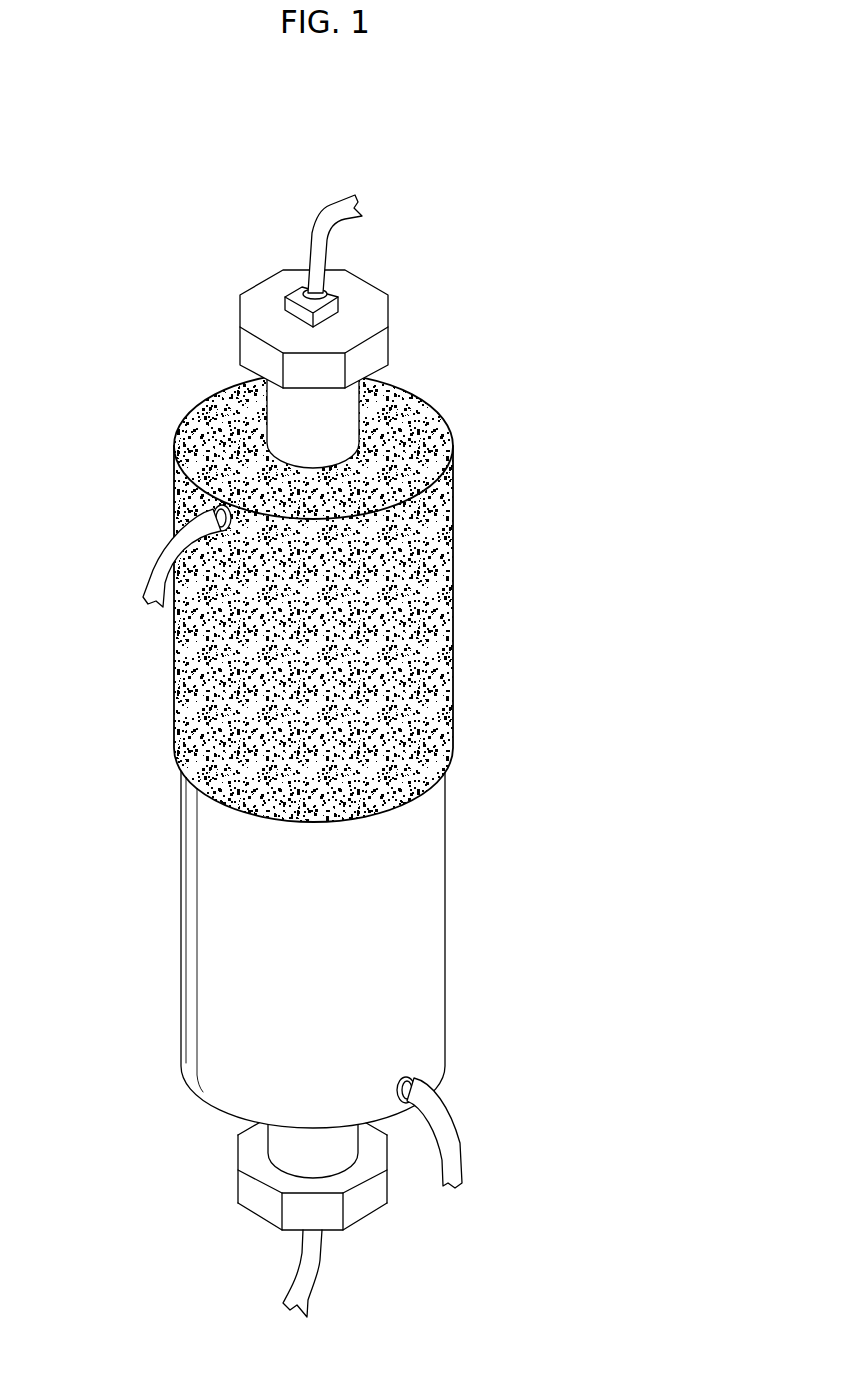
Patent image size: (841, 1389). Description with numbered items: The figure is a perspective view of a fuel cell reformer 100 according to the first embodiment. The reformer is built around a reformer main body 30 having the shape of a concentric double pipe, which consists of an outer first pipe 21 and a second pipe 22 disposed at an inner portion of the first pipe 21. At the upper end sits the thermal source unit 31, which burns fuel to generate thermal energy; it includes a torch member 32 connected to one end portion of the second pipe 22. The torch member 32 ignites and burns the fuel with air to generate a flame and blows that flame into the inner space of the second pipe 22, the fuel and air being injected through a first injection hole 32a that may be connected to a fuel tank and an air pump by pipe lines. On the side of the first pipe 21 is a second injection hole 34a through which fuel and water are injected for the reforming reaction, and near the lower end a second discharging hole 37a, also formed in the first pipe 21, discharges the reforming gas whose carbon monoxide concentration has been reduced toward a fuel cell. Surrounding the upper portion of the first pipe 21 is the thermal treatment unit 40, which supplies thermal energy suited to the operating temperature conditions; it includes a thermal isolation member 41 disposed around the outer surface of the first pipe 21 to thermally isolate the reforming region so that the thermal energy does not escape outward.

The fuel cell reformer 100 is at (397, 225).
The first pipe 21 is at (185, 1060).
The second pipe 22 is at (274, 1140).
The reformer main body 30 is at (94, 1052).
The thermal source unit 31 is at (406, 330).
The torch member 32 is at (339, 302).
The first injection hole 32a is at (296, 295).
The second injection hole 34a is at (208, 510).
The second discharging hole 37a is at (433, 1078).
The thermal treatment unit 40 is at (458, 435).
The thermal isolation member 41 is at (436, 548).